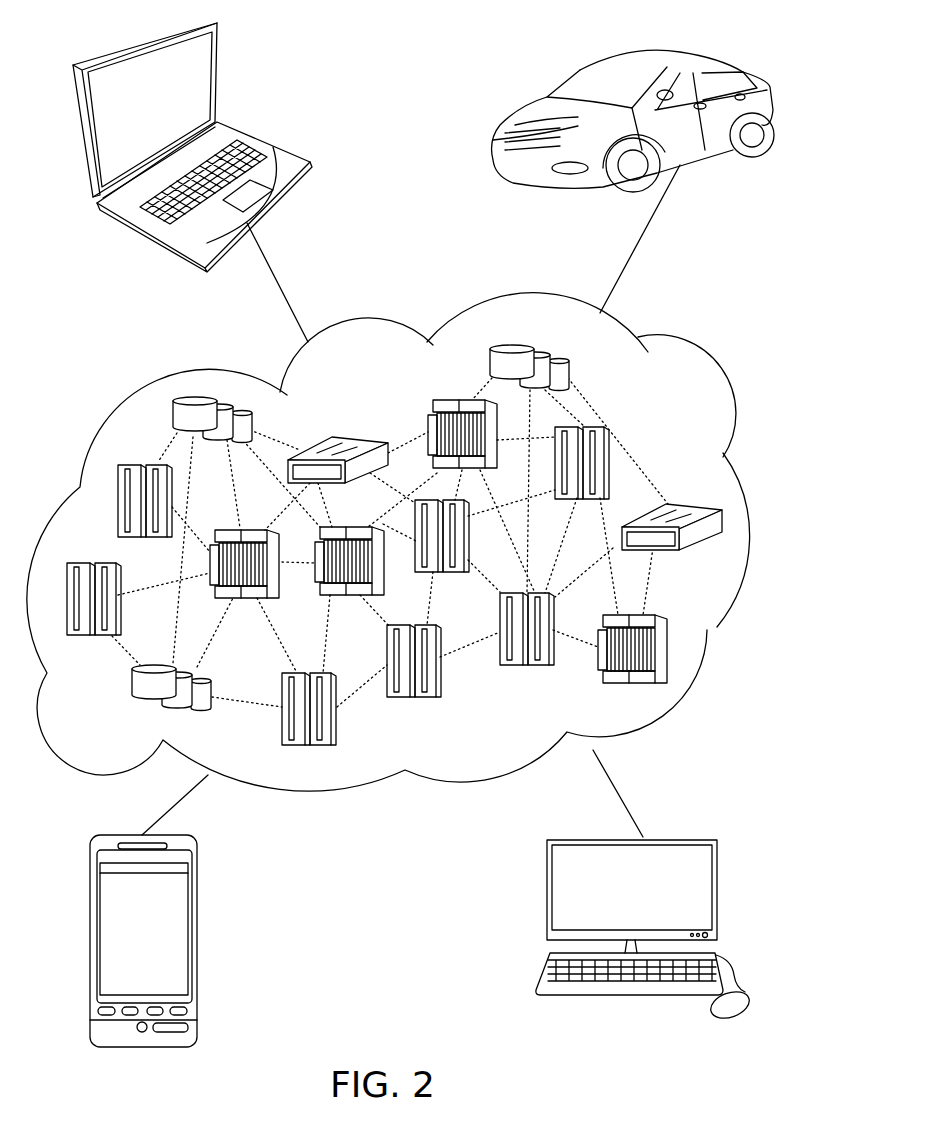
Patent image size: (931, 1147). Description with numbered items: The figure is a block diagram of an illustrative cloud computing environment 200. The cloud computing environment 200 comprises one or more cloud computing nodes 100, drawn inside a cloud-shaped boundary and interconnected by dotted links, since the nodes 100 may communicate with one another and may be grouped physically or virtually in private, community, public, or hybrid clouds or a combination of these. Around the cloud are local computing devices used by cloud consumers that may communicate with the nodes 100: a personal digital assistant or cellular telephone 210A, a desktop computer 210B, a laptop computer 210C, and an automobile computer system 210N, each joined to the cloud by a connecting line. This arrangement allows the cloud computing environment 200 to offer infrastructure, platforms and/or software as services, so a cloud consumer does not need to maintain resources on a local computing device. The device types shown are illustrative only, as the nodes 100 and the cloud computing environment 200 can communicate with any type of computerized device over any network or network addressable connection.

The cloud computing node 100 is at (697, 486).
The cloud computing environment 200 is at (702, 360).
The personal digital assistant or cellular telephone 210A is at (193, 857).
The desktop computer 210B is at (717, 857).
The laptop computer 210C is at (270, 144).
The automobile computer system 210N is at (770, 44).